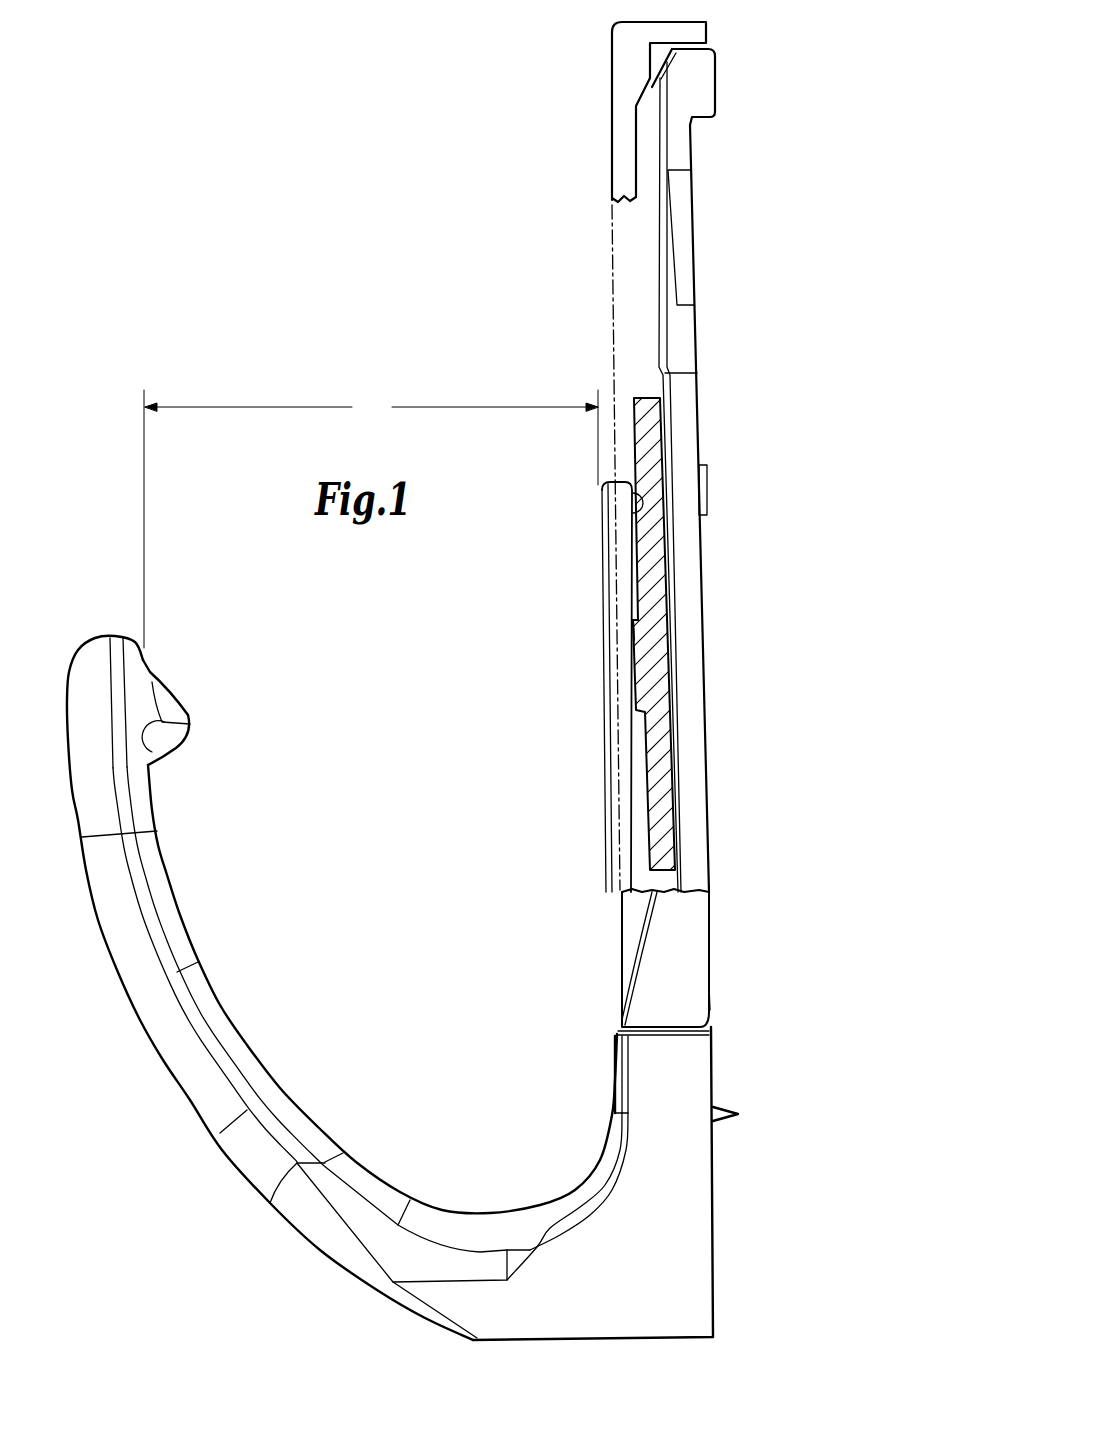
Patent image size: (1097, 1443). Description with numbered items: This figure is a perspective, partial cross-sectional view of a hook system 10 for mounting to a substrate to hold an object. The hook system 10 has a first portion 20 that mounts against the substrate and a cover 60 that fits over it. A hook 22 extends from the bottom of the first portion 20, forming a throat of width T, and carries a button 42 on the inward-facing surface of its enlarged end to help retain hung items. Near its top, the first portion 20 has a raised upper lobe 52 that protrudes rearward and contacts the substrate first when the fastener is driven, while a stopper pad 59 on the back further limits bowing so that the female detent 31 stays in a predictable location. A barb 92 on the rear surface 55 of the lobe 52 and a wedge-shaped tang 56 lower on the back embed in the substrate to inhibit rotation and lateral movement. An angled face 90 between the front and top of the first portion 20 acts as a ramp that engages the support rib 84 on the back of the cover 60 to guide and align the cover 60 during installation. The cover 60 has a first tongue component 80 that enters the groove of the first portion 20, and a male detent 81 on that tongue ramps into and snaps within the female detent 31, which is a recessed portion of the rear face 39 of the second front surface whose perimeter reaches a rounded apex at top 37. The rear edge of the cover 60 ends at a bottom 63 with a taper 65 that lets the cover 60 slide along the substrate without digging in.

The hook system 10 is at (217, 312).
The first portion 20 is at (700, 1188).
The hook 22 is at (187, 1078).
The female detent 31 is at (633, 620).
The top of second front surface 37 is at (604, 481).
The rear face of second front surface 39 is at (640, 526).
The button 42 is at (188, 730).
The upper lobe 52 is at (707, 55).
The rear surface of lobe 55 is at (717, 97).
The tang 56 is at (738, 1114).
The stopper pad 59 is at (707, 488).
The cover 60 is at (695, 985).
The bottom of rear edge 63 is at (712, 998).
The taper 65 is at (713, 1019).
The first tongue component 80 is at (658, 775).
The male detent 81 is at (628, 655).
The support rib 84 is at (652, 88).
The angled face 90 is at (665, 66).
The barb 92 is at (722, 118).